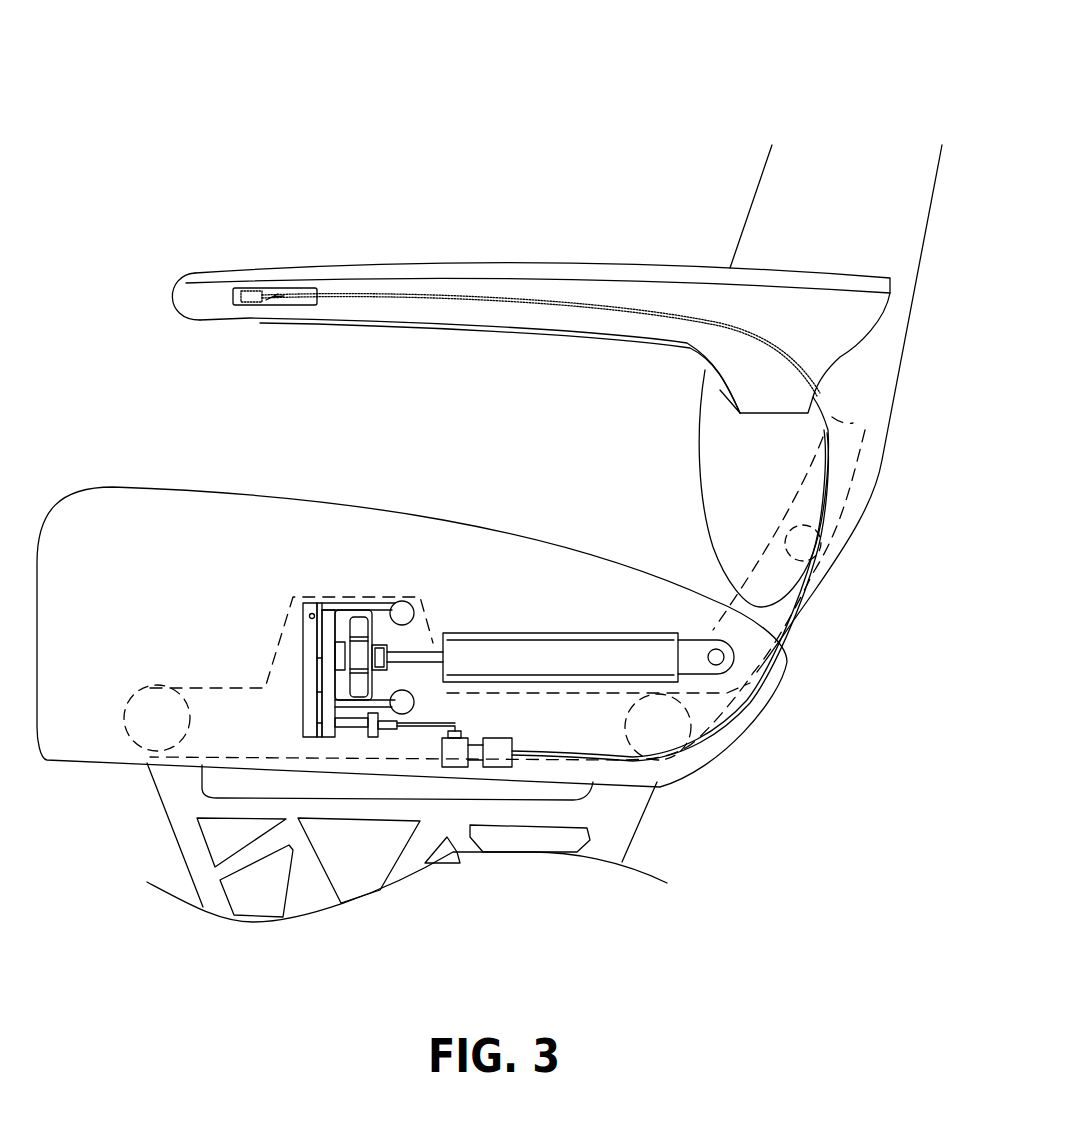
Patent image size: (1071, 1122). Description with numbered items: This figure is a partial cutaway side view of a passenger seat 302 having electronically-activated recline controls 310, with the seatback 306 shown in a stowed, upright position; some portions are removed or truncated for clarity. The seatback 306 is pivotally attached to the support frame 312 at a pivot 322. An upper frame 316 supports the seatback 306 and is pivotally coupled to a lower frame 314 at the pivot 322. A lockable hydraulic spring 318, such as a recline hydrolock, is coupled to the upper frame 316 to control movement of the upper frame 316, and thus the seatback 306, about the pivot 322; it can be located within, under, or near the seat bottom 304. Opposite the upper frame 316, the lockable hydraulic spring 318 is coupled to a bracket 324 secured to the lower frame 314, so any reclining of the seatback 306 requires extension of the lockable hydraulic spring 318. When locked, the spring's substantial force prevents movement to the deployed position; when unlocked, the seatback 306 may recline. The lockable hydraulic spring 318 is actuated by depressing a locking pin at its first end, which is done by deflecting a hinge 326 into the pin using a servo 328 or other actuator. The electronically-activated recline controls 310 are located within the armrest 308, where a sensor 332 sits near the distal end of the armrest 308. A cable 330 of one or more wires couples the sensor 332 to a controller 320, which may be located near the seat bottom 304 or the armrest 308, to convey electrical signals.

The passenger seat 302 is at (197, 82).
The seat bottom 304 is at (127, 486).
The seatback 306 is at (758, 165).
The armrest 308 is at (170, 292).
The electronically-activated recline controls 310 is at (212, 295).
The support frame 312 is at (173, 850).
The lower frame 314 is at (200, 686).
The upper frame 316 is at (847, 497).
The lockable hydraulic spring 318 is at (560, 633).
The controller 320 is at (498, 767).
The pivot 322 is at (657, 762).
The bracket 324 is at (372, 603).
The hinge 326 is at (297, 632).
The servo 328 is at (455, 767).
The cable 330 is at (477, 300).
The sensor 332 is at (252, 305).